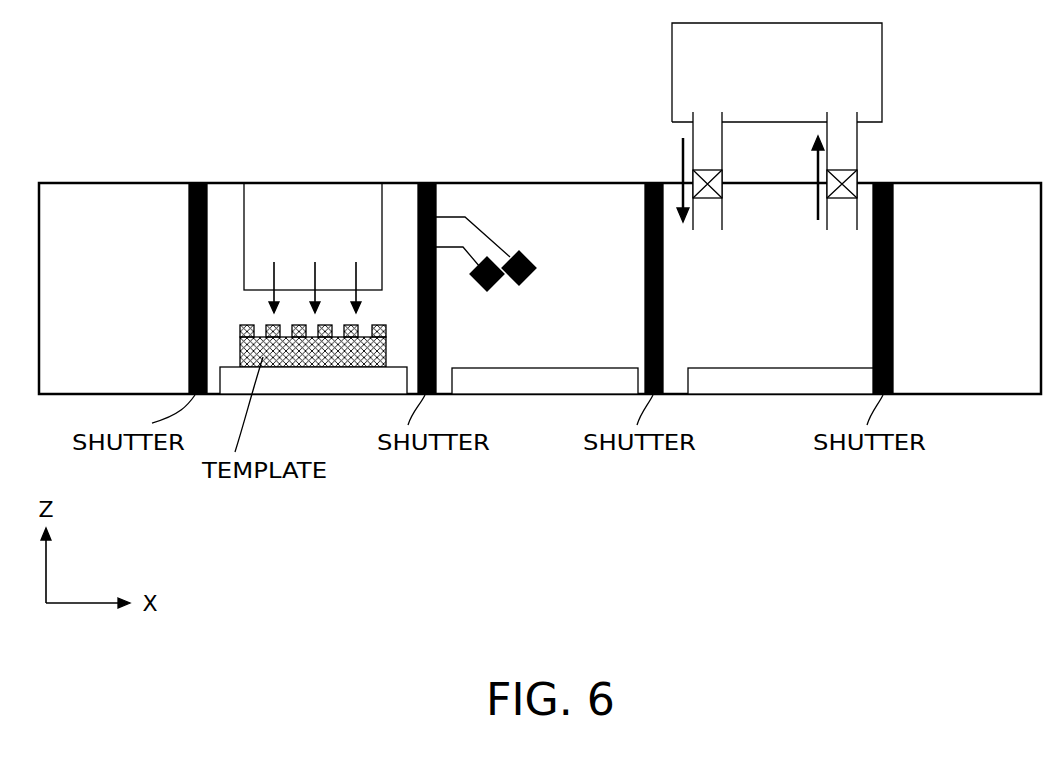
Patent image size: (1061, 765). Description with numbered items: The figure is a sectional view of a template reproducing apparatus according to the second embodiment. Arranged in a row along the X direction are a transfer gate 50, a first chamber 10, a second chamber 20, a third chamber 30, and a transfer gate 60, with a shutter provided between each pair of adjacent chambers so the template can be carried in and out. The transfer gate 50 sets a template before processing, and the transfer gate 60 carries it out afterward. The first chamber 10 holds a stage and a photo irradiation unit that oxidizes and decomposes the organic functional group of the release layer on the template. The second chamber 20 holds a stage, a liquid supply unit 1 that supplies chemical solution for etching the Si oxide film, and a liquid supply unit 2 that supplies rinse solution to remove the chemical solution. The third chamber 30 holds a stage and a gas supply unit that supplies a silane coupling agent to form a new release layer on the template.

The liquid supply unit 1 is at (497, 290).
The liquid supply unit 2 is at (530, 285).
The first chamber 10 is at (230, 197).
The second chamber 20 is at (540, 258).
The third chamber 30 is at (745, 200).
The transfer gate 50 is at (78, 197).
The transfer gate 60 is at (940, 200).